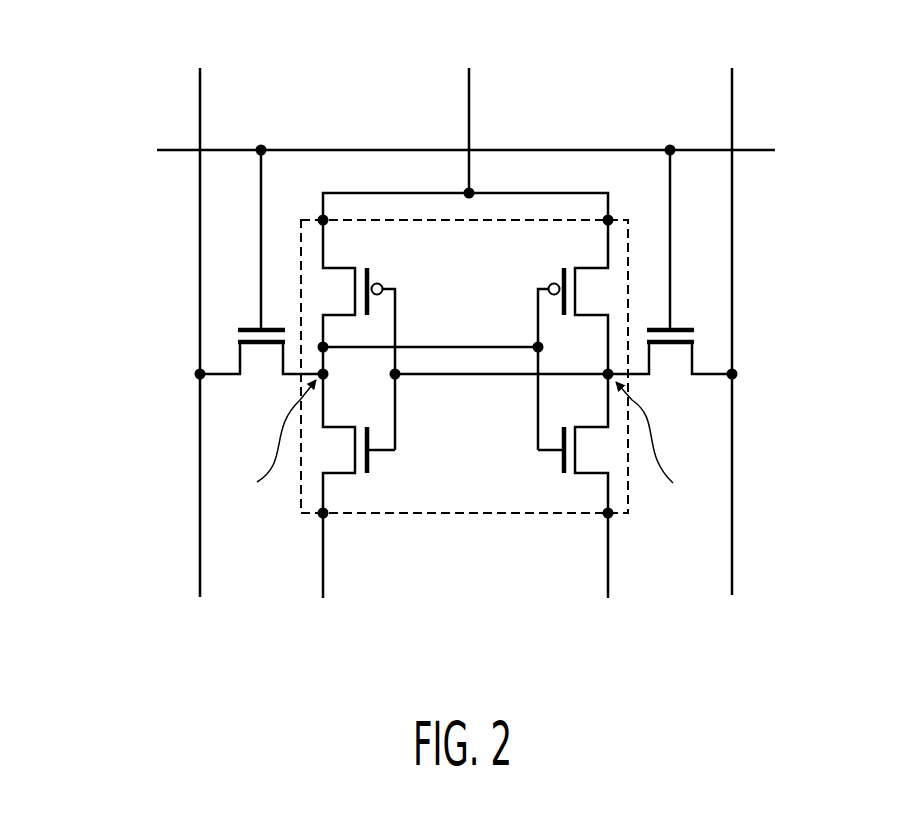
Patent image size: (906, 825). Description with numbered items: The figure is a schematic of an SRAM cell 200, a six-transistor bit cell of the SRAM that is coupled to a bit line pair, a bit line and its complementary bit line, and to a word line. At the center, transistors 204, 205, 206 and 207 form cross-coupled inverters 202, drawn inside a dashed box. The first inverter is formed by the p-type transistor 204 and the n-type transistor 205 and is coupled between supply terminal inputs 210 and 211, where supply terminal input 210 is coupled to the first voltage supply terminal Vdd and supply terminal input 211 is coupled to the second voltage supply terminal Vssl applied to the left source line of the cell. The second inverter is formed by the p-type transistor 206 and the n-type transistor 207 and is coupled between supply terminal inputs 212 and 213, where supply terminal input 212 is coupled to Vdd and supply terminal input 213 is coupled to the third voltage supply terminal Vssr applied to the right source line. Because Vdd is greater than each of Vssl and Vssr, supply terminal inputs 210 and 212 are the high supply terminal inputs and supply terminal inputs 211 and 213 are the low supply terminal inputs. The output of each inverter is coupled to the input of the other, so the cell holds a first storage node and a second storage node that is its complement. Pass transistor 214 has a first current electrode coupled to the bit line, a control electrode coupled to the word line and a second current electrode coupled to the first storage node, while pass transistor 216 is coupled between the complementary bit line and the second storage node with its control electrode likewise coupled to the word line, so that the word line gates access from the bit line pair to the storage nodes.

The SRAM cell 200 is at (95, 96).
The cross-coupled inverters 202 is at (464, 416).
The transistor 204 is at (347, 267).
The transistor 205 is at (370, 460).
The transistor 206 is at (583, 267).
The transistor 207 is at (563, 462).
The supply terminal input 210 is at (323, 216).
The supply terminal input 211 is at (326, 517).
The supply terminal input 212 is at (608, 216).
The supply terminal input 213 is at (605, 517).
The pass transistor 214 is at (250, 328).
The pass transistor 216 is at (683, 328).